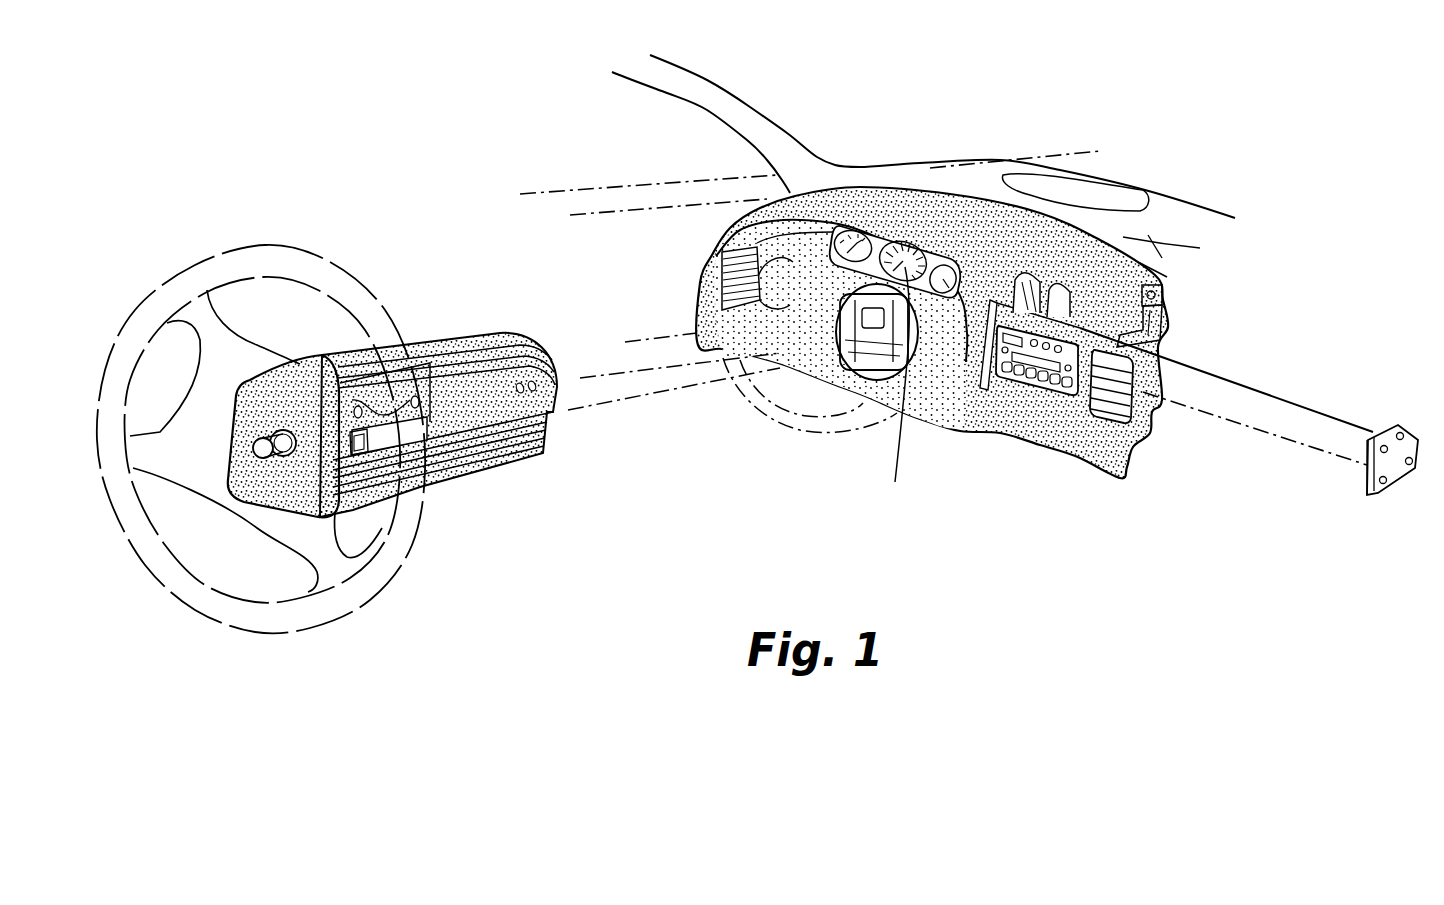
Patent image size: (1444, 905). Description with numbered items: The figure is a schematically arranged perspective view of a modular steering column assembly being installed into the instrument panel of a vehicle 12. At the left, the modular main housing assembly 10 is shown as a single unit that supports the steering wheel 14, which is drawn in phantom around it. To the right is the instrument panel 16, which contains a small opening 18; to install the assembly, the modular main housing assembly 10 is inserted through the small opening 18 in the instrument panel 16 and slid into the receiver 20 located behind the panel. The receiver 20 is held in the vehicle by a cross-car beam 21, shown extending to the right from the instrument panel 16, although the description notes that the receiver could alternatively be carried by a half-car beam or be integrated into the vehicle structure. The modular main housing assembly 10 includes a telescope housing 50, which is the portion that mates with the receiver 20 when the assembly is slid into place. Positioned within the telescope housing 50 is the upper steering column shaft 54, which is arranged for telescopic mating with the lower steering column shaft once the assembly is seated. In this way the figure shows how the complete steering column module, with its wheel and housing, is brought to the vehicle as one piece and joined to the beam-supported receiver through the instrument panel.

The modular main housing assembly 10 is at (392, 424).
The vehicle 12 is at (1012, 128).
The steering wheel 14 is at (180, 275).
The instrument panel 16 is at (1080, 458).
The small opening 18 is at (863, 360).
The receiver 20 is at (897, 390).
The cross-car beam 21 is at (1267, 393).
The telescope housing 50 is at (463, 333).
The upper steering column shaft 54 is at (860, 352).